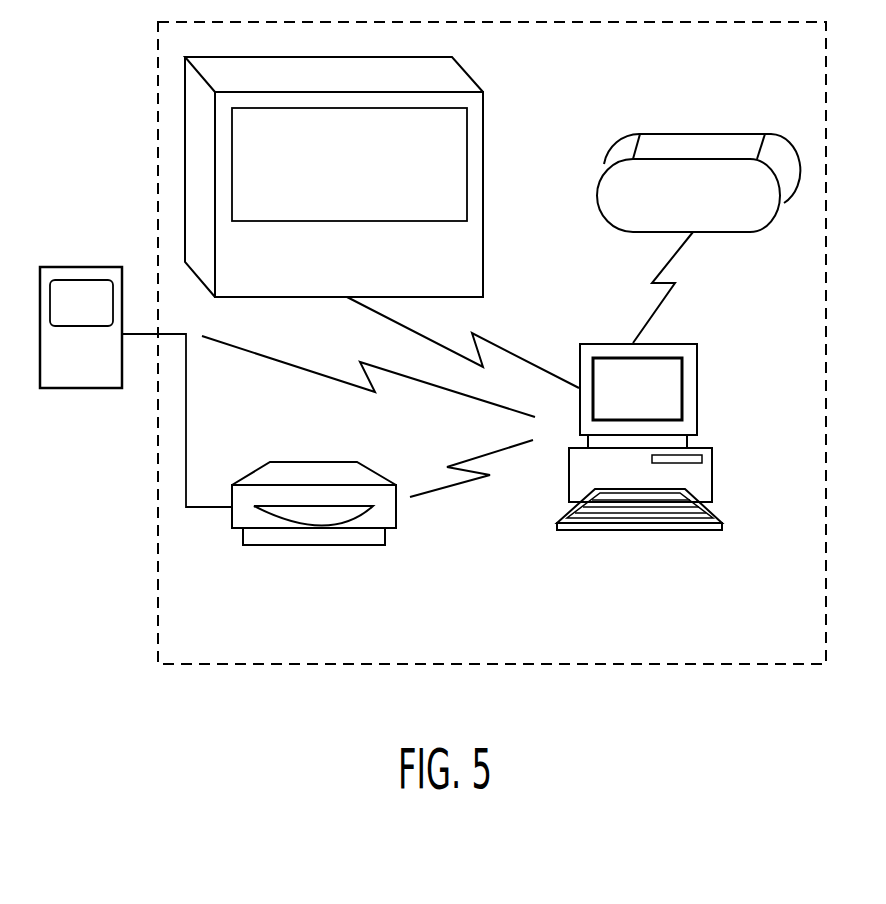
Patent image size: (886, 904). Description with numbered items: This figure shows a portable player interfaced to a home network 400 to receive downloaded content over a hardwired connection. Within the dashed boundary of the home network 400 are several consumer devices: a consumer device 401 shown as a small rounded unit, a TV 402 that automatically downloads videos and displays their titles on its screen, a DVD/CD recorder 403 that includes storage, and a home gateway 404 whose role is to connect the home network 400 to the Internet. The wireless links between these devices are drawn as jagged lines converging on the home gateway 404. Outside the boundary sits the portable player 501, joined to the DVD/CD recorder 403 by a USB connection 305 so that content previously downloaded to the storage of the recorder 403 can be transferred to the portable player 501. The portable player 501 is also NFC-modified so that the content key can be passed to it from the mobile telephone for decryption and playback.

The home network 400 is at (209, 643).
The consumer device 401 is at (704, 221).
The TV 402 is at (364, 283).
The DVD/CD recorder 403 is at (331, 582).
The home gateway 404 is at (659, 567).
The portable player 501 is at (97, 375).
The USB connection 305 is at (186, 417).